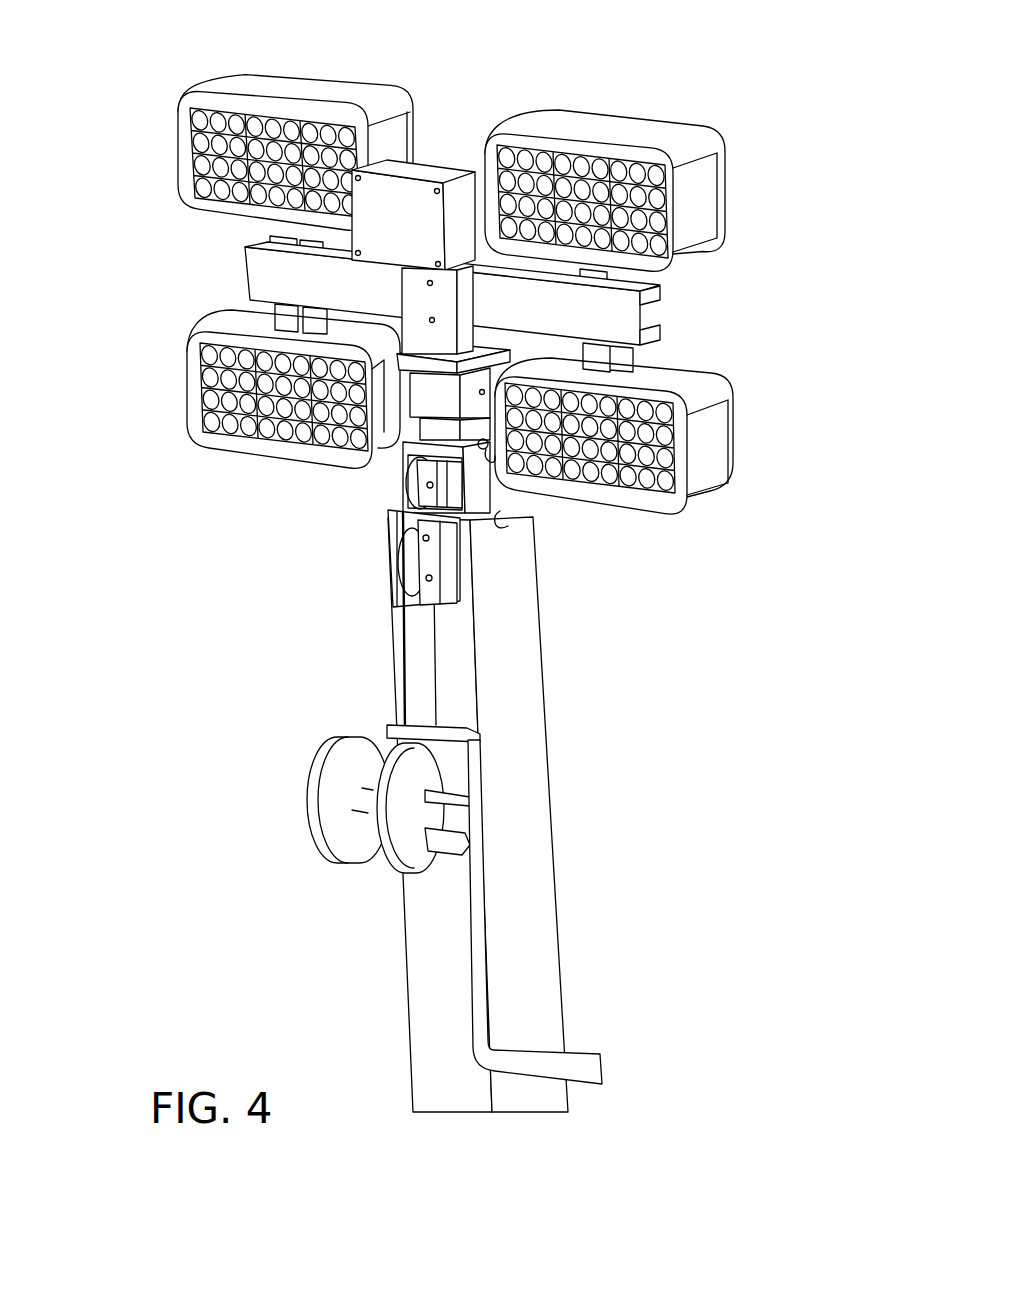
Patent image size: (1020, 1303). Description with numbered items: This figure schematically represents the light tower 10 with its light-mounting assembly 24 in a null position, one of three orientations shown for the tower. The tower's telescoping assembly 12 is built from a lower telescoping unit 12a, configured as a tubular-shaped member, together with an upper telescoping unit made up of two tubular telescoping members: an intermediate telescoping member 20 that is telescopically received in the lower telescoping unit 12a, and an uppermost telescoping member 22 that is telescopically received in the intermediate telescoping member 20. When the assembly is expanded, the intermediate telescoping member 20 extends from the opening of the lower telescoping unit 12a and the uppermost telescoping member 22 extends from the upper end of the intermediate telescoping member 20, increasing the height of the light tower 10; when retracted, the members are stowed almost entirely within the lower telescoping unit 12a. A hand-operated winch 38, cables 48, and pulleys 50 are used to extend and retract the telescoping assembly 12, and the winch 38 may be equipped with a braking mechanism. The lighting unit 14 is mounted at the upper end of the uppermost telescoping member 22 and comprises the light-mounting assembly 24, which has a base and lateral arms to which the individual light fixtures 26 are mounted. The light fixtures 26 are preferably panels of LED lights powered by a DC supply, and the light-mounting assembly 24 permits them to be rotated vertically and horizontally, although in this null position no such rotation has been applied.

The light tower 10 is at (468, 563).
The telescoping assembly 12 is at (478, 740).
The lower telescoping unit 12a is at (538, 905).
The lighting unit 14 is at (426, 288).
The intermediate telescoping member 20 is at (481, 515).
The uppermost telescoping member 22 is at (445, 488).
The light-mounting assembly 24 is at (673, 322).
The light fixtures 26 is at (397, 108).
The hand-operated winch 38 is at (303, 853).
The cables 48 is at (507, 524).
The pulleys 50 is at (403, 580).